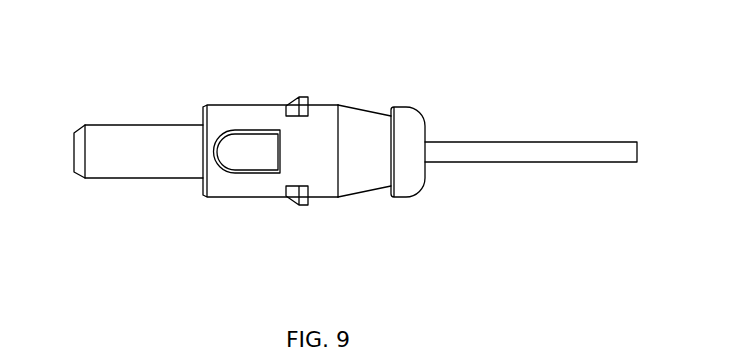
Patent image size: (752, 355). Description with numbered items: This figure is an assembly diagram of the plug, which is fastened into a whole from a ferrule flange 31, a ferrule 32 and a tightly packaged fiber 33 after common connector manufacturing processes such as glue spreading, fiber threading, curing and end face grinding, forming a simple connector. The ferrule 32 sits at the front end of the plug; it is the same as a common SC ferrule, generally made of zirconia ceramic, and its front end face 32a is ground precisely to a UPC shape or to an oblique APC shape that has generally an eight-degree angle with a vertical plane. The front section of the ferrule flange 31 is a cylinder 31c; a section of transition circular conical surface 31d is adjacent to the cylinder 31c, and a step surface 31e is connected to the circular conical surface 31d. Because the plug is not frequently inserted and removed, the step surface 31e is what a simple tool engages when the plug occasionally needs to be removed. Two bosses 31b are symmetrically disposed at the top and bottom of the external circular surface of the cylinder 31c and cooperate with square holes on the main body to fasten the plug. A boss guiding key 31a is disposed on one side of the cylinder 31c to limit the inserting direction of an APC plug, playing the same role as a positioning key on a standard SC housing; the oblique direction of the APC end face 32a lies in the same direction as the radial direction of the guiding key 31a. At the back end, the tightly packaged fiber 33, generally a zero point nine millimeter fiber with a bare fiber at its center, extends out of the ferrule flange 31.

The ferrule flange 31 is at (232, 117).
The boss guiding key 31a is at (242, 155).
The bosses 31b is at (308, 100).
The cylinder 31c is at (320, 170).
The transition circular conical surface 31d is at (355, 177).
The step surface 31e is at (390, 115).
The ferrule 32 is at (112, 150).
The front end face of the ferrule 32a is at (74, 148).
The tightly packaged fiber 33 is at (502, 148).